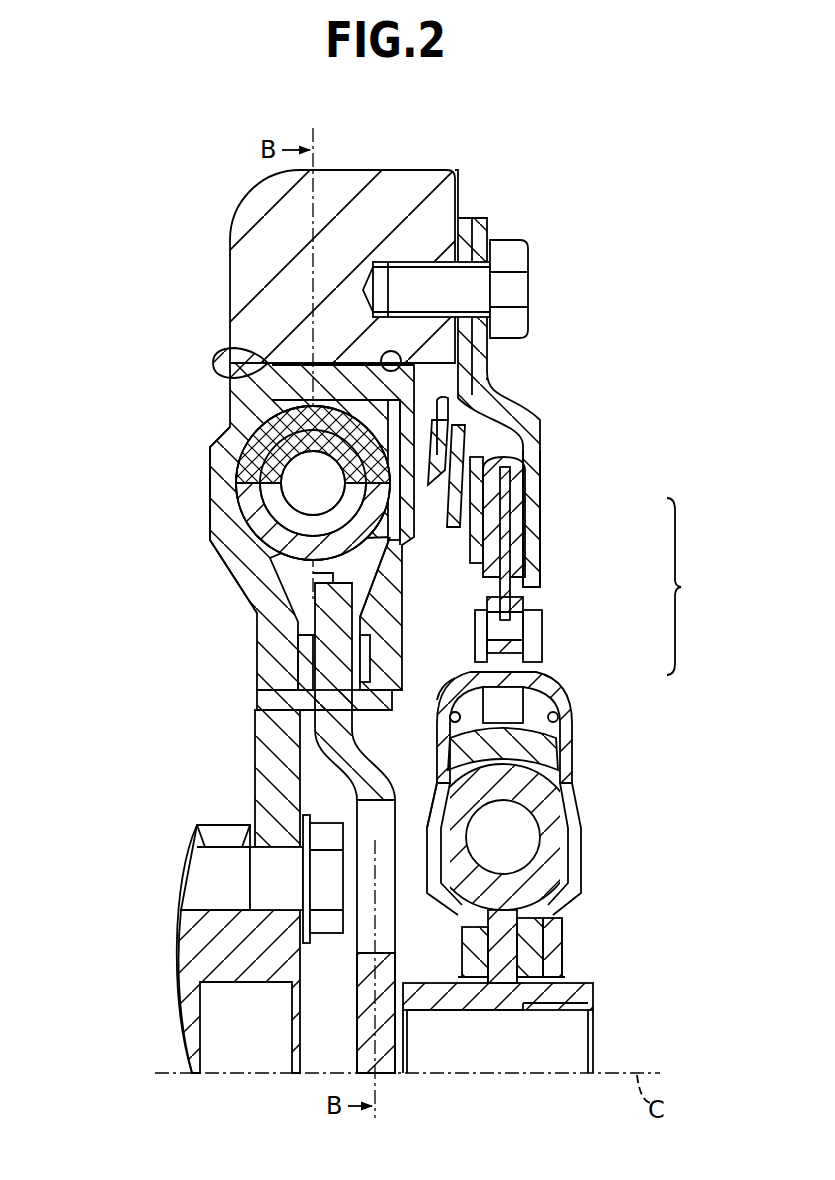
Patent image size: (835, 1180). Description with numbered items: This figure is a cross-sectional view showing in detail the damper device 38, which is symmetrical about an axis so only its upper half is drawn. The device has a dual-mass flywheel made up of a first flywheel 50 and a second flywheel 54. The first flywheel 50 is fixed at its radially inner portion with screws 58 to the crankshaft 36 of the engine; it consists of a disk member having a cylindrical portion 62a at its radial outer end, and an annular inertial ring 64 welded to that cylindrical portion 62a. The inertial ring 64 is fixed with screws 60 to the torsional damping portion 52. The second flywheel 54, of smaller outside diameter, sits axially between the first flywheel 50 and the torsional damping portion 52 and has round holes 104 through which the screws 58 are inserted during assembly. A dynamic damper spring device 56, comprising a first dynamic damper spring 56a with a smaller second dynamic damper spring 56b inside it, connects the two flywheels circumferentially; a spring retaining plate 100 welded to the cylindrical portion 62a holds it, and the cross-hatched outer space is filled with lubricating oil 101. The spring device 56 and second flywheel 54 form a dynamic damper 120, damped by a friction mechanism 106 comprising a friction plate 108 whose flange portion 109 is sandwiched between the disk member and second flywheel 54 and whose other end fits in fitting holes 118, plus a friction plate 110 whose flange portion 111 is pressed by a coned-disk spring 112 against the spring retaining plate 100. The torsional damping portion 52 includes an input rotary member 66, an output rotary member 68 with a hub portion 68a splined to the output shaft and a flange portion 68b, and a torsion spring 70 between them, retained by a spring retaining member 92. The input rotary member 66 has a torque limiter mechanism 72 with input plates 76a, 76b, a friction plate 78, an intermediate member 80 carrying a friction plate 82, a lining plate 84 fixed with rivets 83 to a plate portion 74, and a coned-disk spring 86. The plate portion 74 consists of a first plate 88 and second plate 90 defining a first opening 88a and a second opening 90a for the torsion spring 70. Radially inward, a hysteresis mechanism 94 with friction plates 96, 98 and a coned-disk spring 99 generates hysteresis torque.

The crankshaft 36 is at (225, 960).
The damper device 38 is at (600, 200).
The first flywheel 50 is at (135, 572).
The torsional damping portion 52 is at (672, 382).
The second flywheel 54 is at (362, 1043).
The dynamic damper spring device 56 is at (140, 470).
The first dynamic damper spring 56a is at (300, 487).
The second dynamic damper spring 56b is at (320, 455).
The screws 58 is at (210, 875).
The screws 60 is at (415, 285).
The cylindrical portion 62a is at (330, 380).
The inertial ring 64 is at (368, 228).
The input rotary member 66 is at (688, 586).
The output rotary member 68 is at (490, 1032).
The hub portion 68a is at (470, 990).
The flange portion 68b is at (540, 938).
The torsion spring 70 is at (565, 825).
The torque limiter mechanism 72 is at (565, 514).
The plate portion 74 is at (598, 703).
The input plate 76a is at (520, 412).
The input plate 76b is at (495, 370).
The friction plate 78 is at (520, 537).
The intermediate member 80 is at (520, 462).
The friction plate 82 is at (495, 490).
The rivets 83 is at (510, 635).
The lining plate 84 is at (505, 565).
The coned-disk spring 86 is at (446, 505).
The first plate 88 is at (550, 683).
The first opening 88a is at (560, 727).
The second plate 90 is at (455, 682).
The second opening 90a is at (449, 725).
The spring retaining member 92 is at (552, 760).
The hysteresis mechanism 94 is at (597, 956).
The friction plate 96 is at (545, 1005).
The friction plate 98 is at (465, 975).
The coned-disk spring 99 is at (545, 960).
The spring retaining plate 100 is at (405, 392).
The lubricating oil 101 is at (300, 415).
The round holes 104 is at (400, 812).
The friction mechanism 106 is at (168, 672).
The friction plate 108 is at (280, 676).
The flange portion 109 is at (300, 662).
The friction plate 110 is at (336, 655).
The flange portion 111 is at (372, 612).
The coned-disk spring 112 is at (372, 668).
The fitting holes 118 is at (282, 700).
The dynamic damper 120 is at (182, 592).